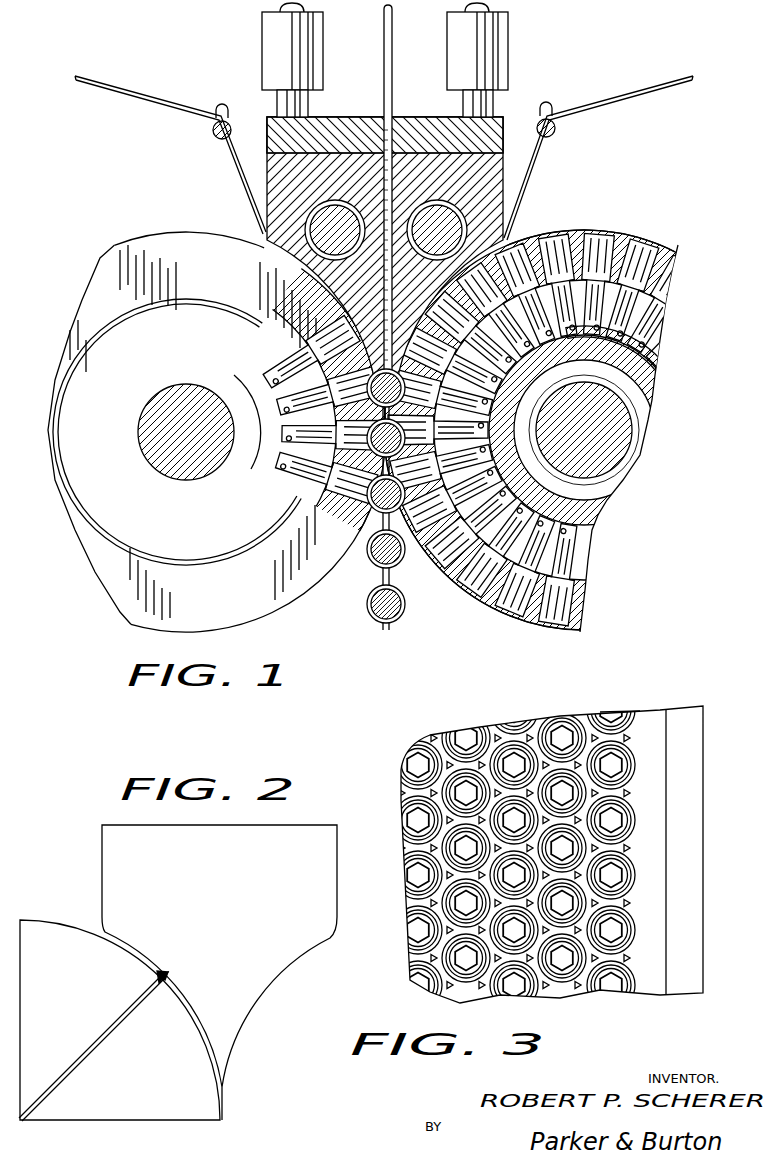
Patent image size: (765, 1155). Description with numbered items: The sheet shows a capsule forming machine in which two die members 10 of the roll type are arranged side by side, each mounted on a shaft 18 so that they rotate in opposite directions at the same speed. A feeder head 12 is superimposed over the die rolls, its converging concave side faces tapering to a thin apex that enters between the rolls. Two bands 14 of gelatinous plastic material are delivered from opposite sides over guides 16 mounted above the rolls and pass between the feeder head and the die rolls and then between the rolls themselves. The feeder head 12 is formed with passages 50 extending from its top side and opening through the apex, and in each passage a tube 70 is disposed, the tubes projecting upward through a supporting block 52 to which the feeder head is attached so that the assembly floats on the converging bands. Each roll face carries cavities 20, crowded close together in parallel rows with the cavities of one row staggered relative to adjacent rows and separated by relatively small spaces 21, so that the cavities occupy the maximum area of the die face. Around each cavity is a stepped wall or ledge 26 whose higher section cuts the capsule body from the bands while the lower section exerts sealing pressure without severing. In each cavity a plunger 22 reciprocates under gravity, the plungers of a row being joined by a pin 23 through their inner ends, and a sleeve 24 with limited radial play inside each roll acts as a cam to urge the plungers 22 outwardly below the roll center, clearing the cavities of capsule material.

In FIG. 1, the die member 10 is at (105, 268).
In FIG. 2, the die member 10 is at (82, 1002).
In FIG. 3, the die member 10 is at (668, 762).
In FIG. 1, the feeder head 12 is at (498, 169).
In FIG. 2, the feeder head 12 is at (244, 904).
In FIG. 1, the band 14 is at (160, 96).
In FIG. 1, the guide 16 is at (210, 131).
In FIG. 1, the shaft 18 is at (166, 470).
In FIG. 1, the cavity 20 is at (536, 236).
In FIG. 3, the cavity 20 is at (636, 822).
In FIG. 3, the land between pockets 21 is at (642, 860).
In FIG. 1, the plunger 22 is at (660, 292).
In FIG. 1, the pin 23 is at (656, 358).
In FIG. 1, the sleeve 24 is at (657, 395).
In FIG. 1, the wall or ledge 26 is at (598, 236).
In FIG. 3, the wall or ledge 26 is at (620, 713).
In FIG. 1, the passage 50 is at (381, 118).
In FIG. 1, the supporting block 52 is at (438, 118).
In FIG. 1, the tube 70 is at (392, 42).